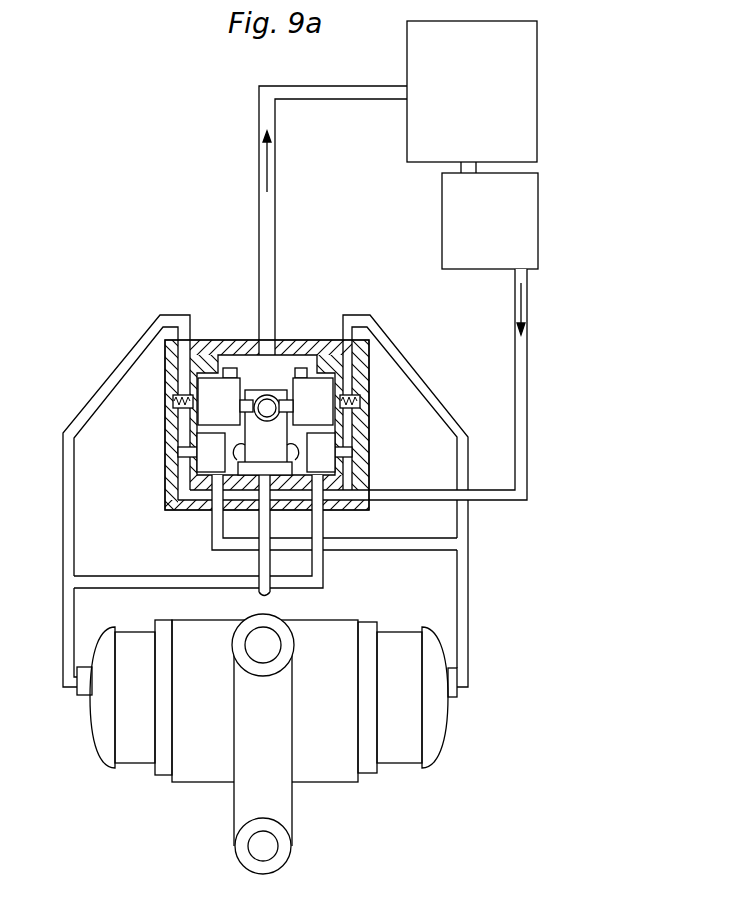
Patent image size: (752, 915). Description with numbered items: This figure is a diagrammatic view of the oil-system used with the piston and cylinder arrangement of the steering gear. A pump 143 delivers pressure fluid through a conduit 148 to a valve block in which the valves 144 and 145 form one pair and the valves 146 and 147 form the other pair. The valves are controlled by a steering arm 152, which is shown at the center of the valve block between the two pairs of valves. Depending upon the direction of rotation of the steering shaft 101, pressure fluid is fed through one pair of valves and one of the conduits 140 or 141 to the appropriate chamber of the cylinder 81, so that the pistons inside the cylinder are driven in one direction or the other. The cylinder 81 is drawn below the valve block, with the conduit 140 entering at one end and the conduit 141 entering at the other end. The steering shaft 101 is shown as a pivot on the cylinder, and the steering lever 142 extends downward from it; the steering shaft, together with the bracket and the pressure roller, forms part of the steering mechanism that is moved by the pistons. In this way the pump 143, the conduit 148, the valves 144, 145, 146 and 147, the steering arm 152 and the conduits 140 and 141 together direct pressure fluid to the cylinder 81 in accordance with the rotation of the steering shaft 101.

The cylinder 81 is at (400, 765).
The steering shaft 101 is at (268, 642).
The conduit 140 is at (68, 680).
The conduit 141 is at (461, 681).
The steering lever 142 is at (252, 796).
The pump 143 is at (518, 228).
The valve 144 is at (308, 402).
The valve 145 is at (318, 448).
The valve 146 is at (215, 400).
The valve 147 is at (203, 452).
The conduit 148 is at (522, 433).
The steering arm 152 is at (275, 390).